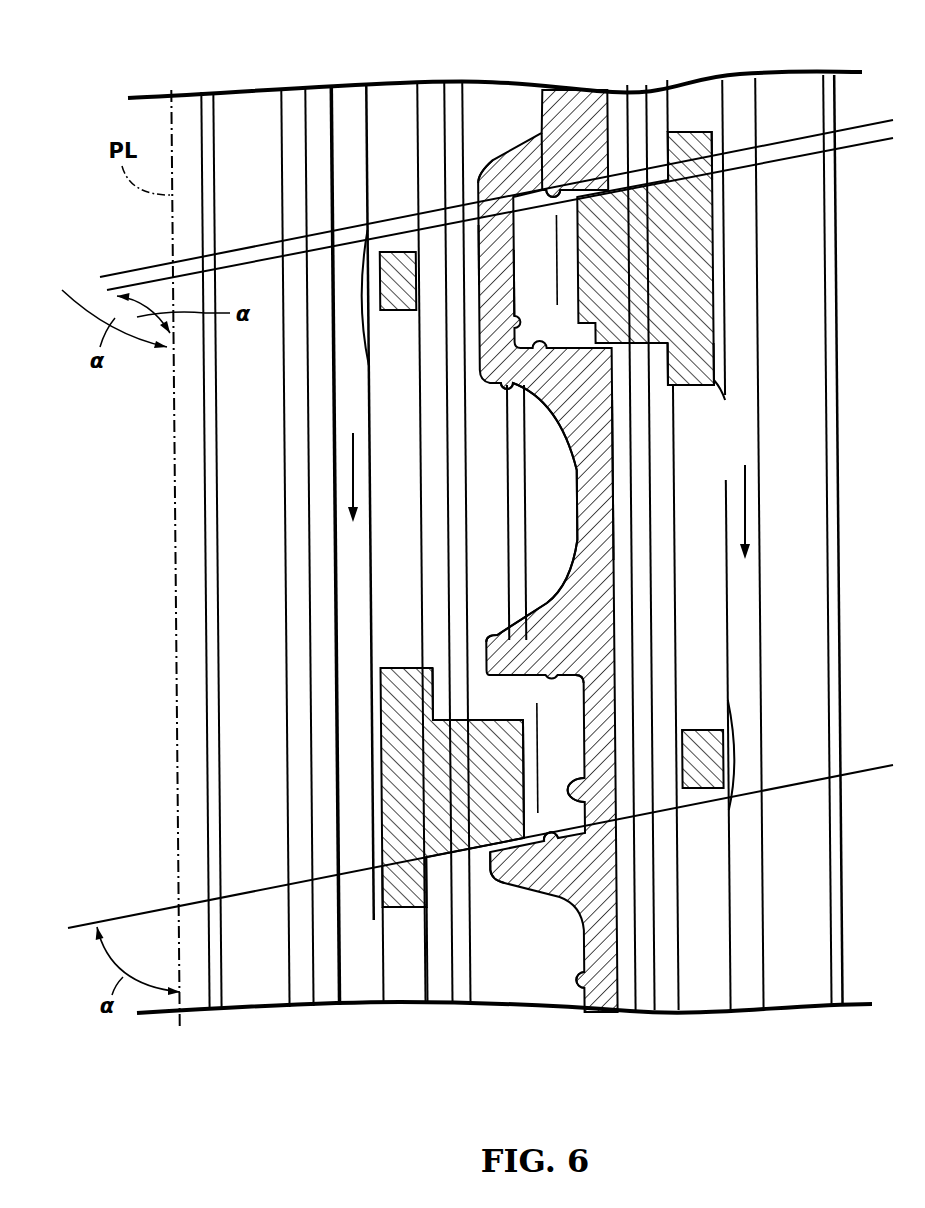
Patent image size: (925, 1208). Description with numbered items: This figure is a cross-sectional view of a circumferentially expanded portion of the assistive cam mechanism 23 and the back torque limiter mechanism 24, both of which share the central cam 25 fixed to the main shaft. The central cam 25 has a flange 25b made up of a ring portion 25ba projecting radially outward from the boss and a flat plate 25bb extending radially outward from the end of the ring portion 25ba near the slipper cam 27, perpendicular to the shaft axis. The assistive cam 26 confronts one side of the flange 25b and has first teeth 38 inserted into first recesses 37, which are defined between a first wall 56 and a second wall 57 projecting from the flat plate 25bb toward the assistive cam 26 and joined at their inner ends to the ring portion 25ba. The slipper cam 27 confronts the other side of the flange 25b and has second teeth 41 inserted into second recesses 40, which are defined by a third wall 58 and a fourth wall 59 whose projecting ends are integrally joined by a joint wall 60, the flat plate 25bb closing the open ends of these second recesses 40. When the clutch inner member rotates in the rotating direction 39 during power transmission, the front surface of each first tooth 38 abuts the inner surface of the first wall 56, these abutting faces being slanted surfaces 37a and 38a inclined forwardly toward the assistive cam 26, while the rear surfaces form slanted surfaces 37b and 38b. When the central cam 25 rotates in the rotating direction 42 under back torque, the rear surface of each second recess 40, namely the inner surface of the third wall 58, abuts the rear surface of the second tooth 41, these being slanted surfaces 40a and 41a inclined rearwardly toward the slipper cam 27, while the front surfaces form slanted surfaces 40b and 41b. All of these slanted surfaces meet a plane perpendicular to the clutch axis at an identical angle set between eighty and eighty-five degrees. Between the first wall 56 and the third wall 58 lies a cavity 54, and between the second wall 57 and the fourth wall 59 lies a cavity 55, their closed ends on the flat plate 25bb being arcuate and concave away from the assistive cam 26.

The assistive cam mechanism 23 is at (478, 876).
The back torque limiter mechanism 24 is at (657, 375).
The central cam 25 is at (612, 86).
The flange 25b is at (588, 90).
The ring portion 25ba is at (507, 473).
The flat plate 25bb is at (617, 483).
The assistive cam 26 is at (380, 770).
The slipper cam 27 is at (703, 242).
The first recess 37 is at (565, 815).
The slanted surface 37a is at (570, 832).
The slanted surface 37b is at (587, 683).
The first tooth 38 is at (520, 752).
The slanted surface 38a is at (517, 883).
The slanted surface 38b is at (490, 713).
The rotating direction 39 is at (353, 470).
The second recess 40 is at (480, 352).
The slanted surface 40a is at (513, 150).
The slanted surface 40b is at (541, 578).
The second tooth 41 is at (573, 263).
The slanted surface 41a is at (614, 172).
The slanted surface 41b is at (713, 340).
The rotating direction 42 is at (537, 533).
The cavity 54 is at (582, 983).
The cavity 55 is at (590, 545).
The first wall 56 is at (492, 853).
The second wall 57 is at (490, 640).
The third wall 58 is at (491, 160).
The fourth wall 59 is at (494, 385).
The joint wall 60 is at (480, 257).